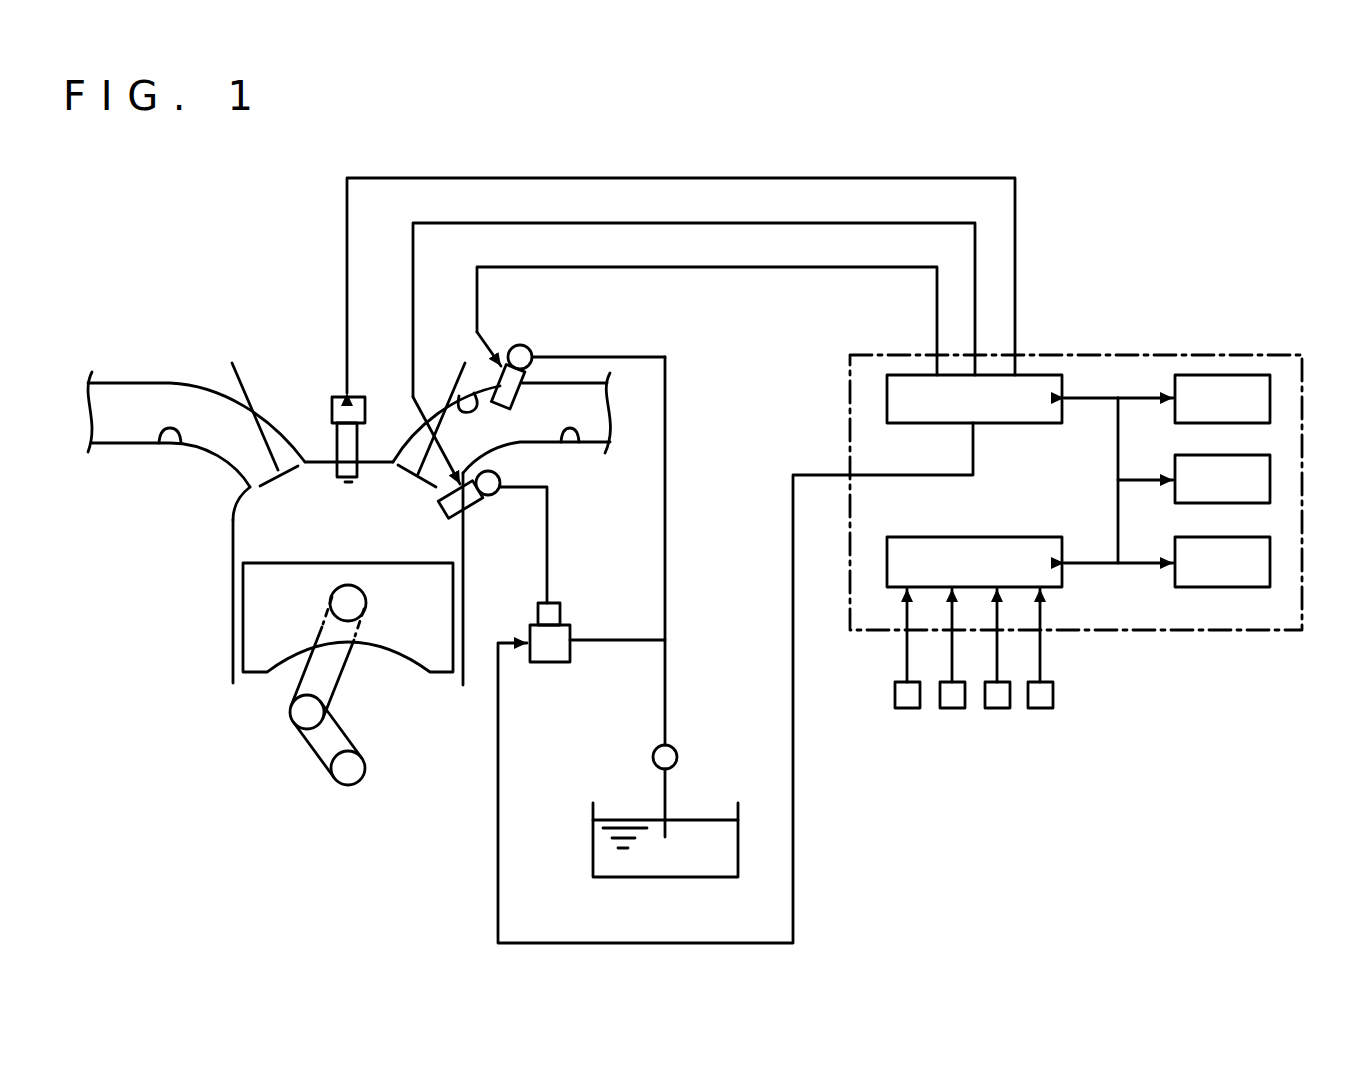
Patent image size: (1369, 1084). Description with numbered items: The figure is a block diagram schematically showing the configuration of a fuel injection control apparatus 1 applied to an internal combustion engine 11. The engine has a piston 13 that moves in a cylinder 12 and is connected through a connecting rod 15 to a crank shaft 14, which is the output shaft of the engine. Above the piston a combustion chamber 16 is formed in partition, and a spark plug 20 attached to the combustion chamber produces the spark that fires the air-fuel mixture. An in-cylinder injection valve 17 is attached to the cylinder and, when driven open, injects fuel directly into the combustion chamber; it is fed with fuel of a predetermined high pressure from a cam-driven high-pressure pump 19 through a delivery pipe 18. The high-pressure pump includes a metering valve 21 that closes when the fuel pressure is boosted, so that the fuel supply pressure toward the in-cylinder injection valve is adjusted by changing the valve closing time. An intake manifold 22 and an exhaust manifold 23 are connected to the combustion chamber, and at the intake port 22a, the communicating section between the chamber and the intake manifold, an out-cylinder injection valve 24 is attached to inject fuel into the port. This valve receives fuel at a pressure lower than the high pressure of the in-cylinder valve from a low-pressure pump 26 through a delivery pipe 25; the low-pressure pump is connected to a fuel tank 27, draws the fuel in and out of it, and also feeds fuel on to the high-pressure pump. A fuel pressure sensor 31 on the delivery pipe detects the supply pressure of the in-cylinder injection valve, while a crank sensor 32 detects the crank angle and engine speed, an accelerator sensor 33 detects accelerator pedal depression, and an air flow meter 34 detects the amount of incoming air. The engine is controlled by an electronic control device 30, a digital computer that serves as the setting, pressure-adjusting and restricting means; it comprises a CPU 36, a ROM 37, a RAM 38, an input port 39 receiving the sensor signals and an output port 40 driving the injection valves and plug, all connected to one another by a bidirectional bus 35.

The fuel injection control apparatus 1 is at (1243, 216).
The internal combustion engine 11 is at (140, 590).
The cylinder 12 is at (232, 681).
The piston 13 is at (255, 608).
The crank shaft 14 is at (337, 782).
The connecting rod 15 is at (330, 673).
The combustion chamber 16 is at (363, 533).
The in-cylinder injection valve 17 is at (476, 502).
The delivery pipe 18 is at (497, 494).
The high-pressure pump 19 is at (570, 650).
The spark plug 20 is at (332, 445).
The metering valve 21 is at (560, 615).
The intake manifold 22 is at (577, 442).
The intake port 22a is at (457, 395).
The exhaust manifold 23 is at (158, 443).
The out-cylinder injection valve 24 is at (533, 357).
The delivery pipe 25 is at (517, 345).
The low-pressure pump 26 is at (677, 747).
The fuel tank 27 is at (593, 840).
The electronic control device 30 is at (1195, 355).
The fuel pressure sensor 31 is at (895, 697).
The crank sensor 32 is at (955, 710).
The accelerator sensor 33 is at (997, 710).
The air flow meter 34 is at (1053, 697).
The bidirectional bus 35 is at (1140, 393).
The CPU 36 is at (1270, 397).
The ROM 37 is at (1270, 480).
The RAM 38 is at (1270, 563).
The input port 39 is at (1000, 537).
The output port 40 is at (1037, 375).